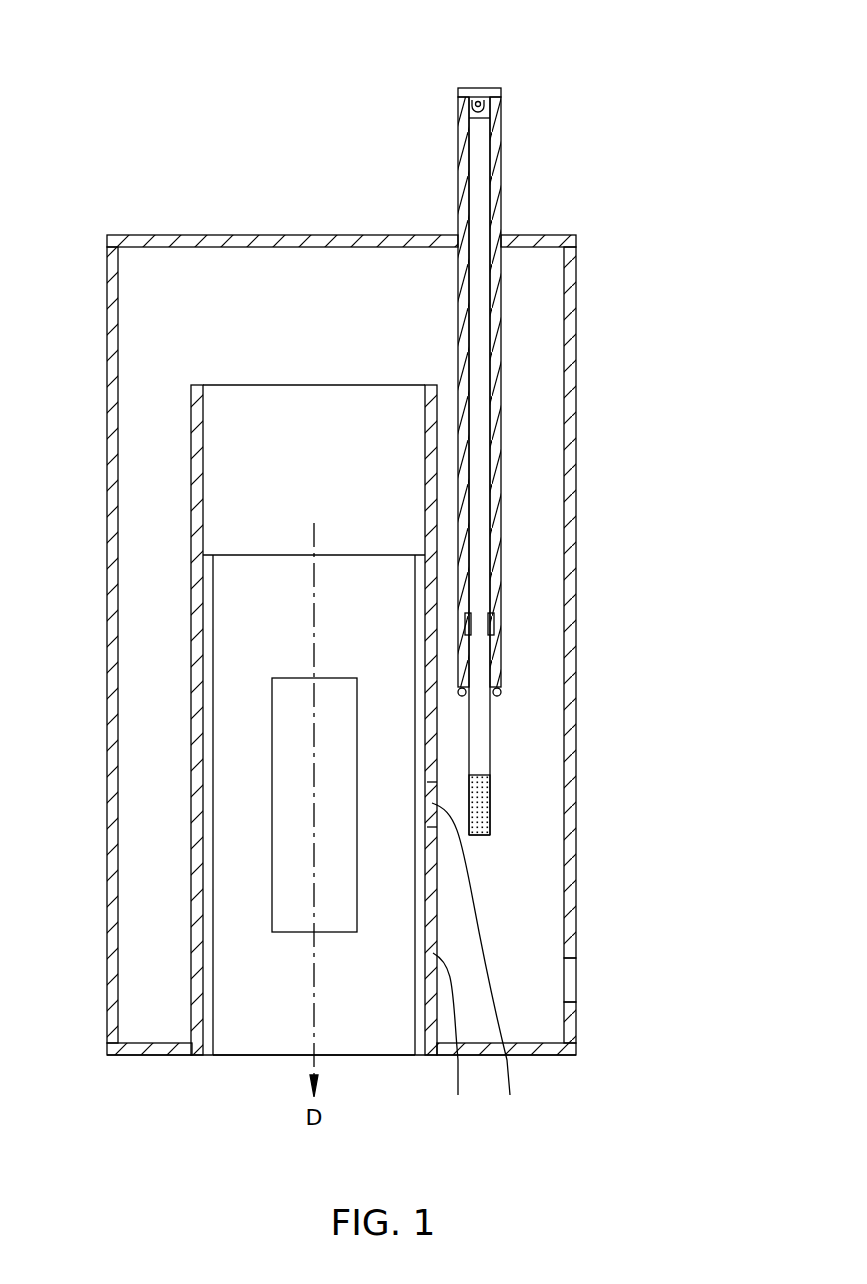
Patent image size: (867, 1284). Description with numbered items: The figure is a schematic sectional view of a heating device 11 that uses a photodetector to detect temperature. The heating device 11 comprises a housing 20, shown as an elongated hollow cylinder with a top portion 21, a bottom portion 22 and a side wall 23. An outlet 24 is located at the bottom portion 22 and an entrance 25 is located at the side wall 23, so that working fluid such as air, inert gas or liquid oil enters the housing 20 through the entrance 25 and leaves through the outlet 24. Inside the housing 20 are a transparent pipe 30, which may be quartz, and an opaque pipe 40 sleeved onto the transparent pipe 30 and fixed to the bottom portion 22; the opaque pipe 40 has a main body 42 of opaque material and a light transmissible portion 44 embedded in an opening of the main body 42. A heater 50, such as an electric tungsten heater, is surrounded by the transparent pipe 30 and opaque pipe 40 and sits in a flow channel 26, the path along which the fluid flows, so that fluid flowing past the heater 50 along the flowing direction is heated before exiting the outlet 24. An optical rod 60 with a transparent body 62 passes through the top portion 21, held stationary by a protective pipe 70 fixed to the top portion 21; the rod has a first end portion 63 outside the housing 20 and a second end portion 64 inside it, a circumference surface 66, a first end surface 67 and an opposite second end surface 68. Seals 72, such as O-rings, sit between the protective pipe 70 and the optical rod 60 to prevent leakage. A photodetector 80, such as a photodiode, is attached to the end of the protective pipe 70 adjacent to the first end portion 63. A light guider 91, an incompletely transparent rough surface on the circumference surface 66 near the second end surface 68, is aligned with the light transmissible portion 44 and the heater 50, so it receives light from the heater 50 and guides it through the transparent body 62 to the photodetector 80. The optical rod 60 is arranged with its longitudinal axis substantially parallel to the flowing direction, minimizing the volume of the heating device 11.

The heating device 11 is at (647, 97).
The housing 20 is at (406, 637).
The top portion 21 is at (290, 240).
The bottom portion 22 is at (148, 1055).
The side wall 23 is at (570, 918).
The outlet 24 is at (360, 1057).
The entrance 25 is at (576, 983).
The flow channel 26 is at (257, 1015).
The transparent pipe 30 is at (205, 868).
The opaque pipe 40 is at (482, 982).
The main body 42 is at (452, 1037).
The light transmissible portion 44 is at (478, 962).
The heater 50 is at (290, 757).
The optical rod 60 is at (584, 448).
The transparent body 62 is at (482, 532).
The first end portion 63 is at (475, 153).
The second end portion 64 is at (491, 805).
The circumference surface 66 is at (491, 760).
The first end surface 67 is at (483, 117).
The second end surface 68 is at (491, 840).
The protective pipe 70 is at (496, 440).
The seals 72 is at (497, 622).
The photodetector 80 is at (478, 100).
The light guider 91 is at (494, 823).